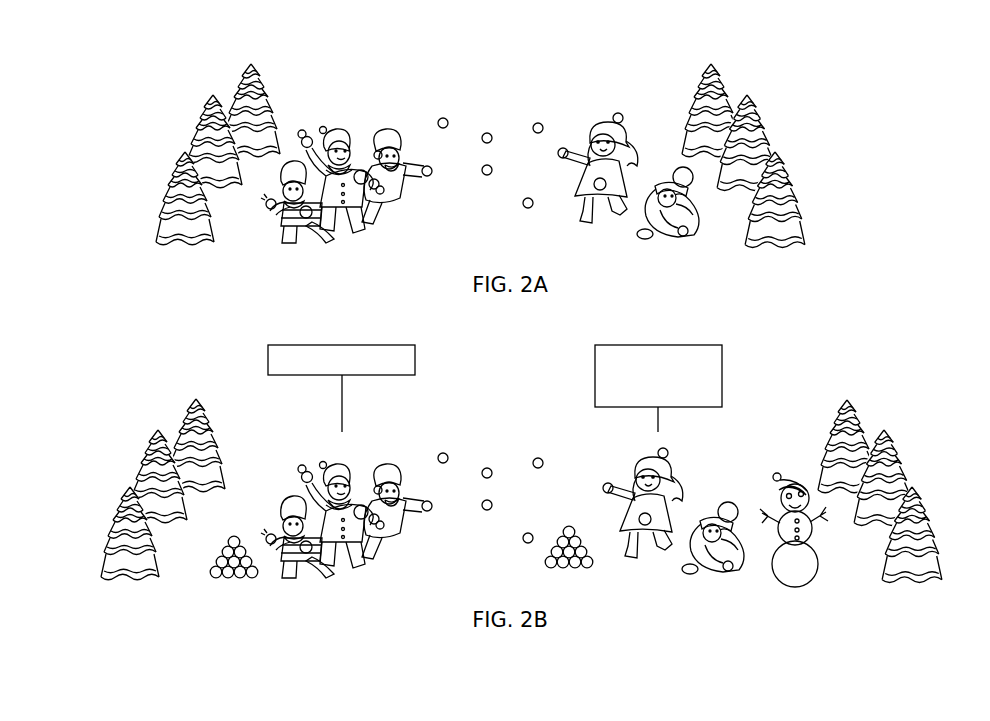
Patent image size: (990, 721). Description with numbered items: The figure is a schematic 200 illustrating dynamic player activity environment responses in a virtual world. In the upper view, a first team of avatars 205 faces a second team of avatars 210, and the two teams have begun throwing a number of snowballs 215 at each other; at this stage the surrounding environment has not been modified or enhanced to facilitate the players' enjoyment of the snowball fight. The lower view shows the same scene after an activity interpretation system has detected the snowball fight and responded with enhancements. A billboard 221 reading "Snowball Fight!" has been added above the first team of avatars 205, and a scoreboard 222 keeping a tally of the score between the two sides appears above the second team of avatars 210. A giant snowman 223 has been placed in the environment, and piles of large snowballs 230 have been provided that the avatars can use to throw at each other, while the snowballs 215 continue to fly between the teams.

In FIG. 2A, the schematic 200 is at (865, 67).
In FIG. 2A, the first team of avatars 205 is at (346, 204).
In FIG. 2B, the first team of avatars 205 is at (346, 539).
In FIG. 2A, the second team of avatars 210 is at (632, 195).
In FIG. 2B, the second team of avatars 210 is at (677, 529).
In FIG. 2A, the snowballs 215 is at (488, 140).
In FIG. 2B, the snowballs 215 is at (488, 475).
In FIG. 2B, the billboard 221 is at (415, 350).
In FIG. 2B, the scoreboard 222 is at (722, 352).
In FIG. 2B, the snowman 223 is at (812, 582).
In FIG. 2B, the piles of large snowballs 230 is at (226, 584).